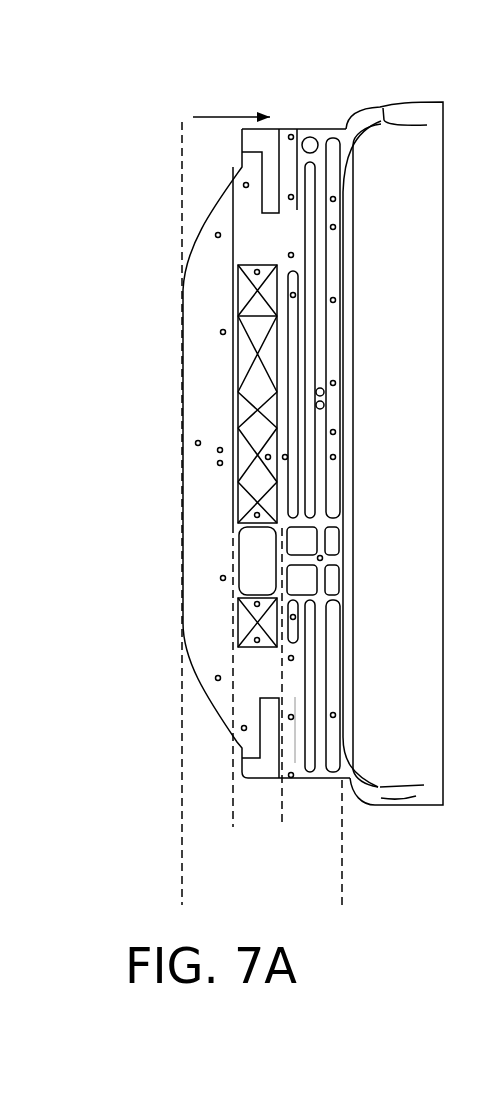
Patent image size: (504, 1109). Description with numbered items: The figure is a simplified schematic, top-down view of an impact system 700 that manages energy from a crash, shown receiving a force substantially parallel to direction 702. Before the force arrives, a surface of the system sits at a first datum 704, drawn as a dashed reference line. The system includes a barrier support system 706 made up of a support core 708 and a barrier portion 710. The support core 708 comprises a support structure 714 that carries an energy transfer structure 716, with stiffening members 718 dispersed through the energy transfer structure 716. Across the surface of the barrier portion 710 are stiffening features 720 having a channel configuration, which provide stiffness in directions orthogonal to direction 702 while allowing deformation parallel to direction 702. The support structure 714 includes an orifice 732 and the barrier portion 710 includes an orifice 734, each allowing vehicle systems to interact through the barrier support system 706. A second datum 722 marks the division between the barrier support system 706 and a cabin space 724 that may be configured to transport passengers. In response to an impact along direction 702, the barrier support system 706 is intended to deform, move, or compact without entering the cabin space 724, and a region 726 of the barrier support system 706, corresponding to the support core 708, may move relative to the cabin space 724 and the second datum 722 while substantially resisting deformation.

The impact system 700 is at (185, 93).
The direction 702 is at (225, 116).
The first datum 704 is at (182, 905).
The barrier support system 706 is at (387, 883).
The support core 708 is at (230, 660).
The barrier portion 710 is at (315, 788).
The support structure 714 is at (202, 294).
The energy transfer structure 716 is at (201, 291).
The stiffening members 718 is at (225, 289).
The stiffening features 720 is at (293, 306).
The second datum 722 is at (342, 905).
The cabin space 724 is at (418, 827).
The region 726 is at (257, 813).
The orifice 732 is at (260, 567).
The orifice 734 is at (300, 547).